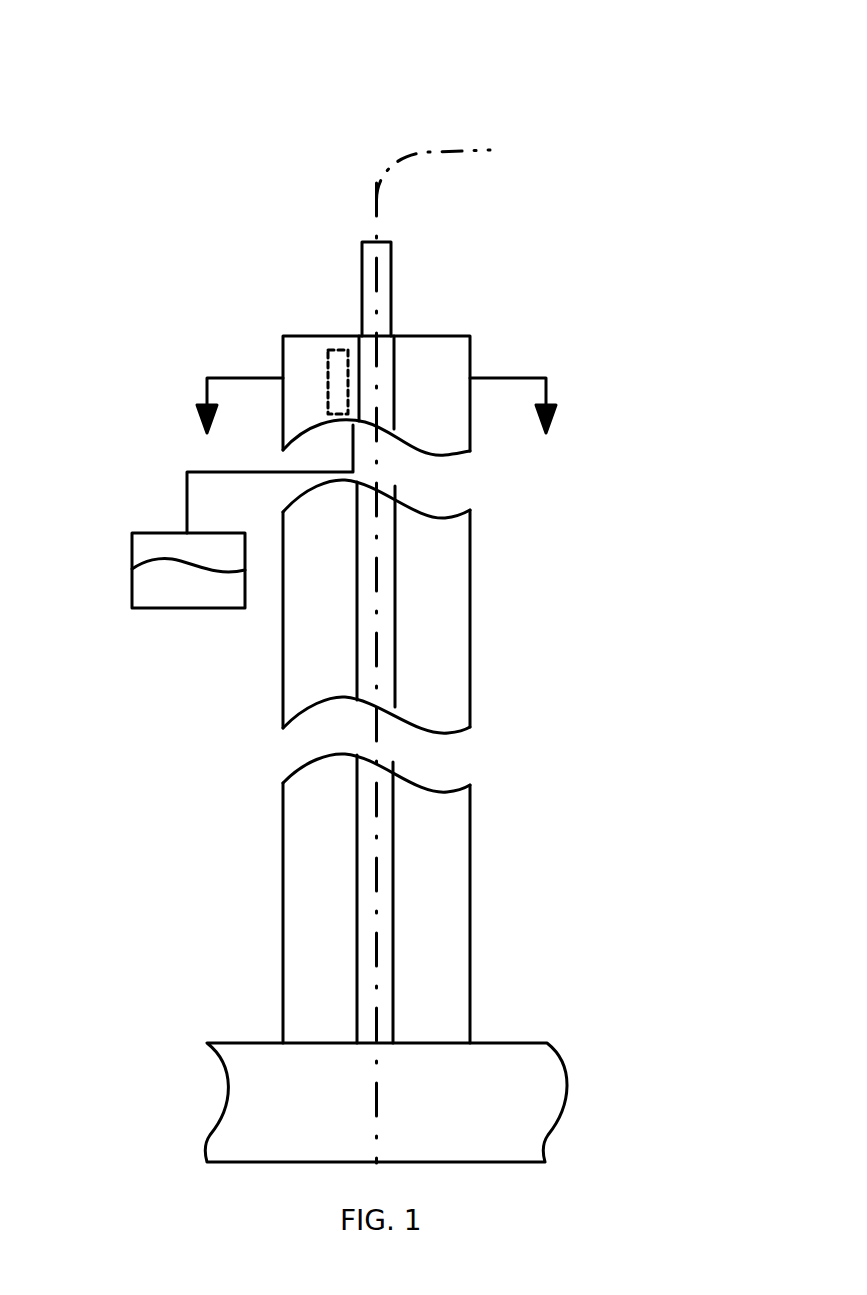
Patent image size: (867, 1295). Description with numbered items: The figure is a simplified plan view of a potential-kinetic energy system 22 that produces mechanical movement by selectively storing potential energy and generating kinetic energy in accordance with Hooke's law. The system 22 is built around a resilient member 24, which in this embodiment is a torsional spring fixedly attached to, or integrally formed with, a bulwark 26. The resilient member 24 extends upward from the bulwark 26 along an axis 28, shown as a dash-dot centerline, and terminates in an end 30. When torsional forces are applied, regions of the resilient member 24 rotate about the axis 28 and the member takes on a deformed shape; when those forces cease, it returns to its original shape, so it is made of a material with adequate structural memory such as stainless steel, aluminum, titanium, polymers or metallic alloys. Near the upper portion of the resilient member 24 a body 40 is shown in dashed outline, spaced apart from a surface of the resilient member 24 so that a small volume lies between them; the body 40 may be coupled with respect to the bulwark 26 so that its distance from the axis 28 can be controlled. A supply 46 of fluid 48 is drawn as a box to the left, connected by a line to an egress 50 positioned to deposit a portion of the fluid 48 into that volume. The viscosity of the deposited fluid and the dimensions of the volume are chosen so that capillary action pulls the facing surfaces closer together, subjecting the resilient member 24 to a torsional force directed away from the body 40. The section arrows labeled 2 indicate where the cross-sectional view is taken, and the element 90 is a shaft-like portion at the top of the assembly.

The potential-kinetic energy (PKE) system 22 is at (443, 86).
The axis 28 is at (450, 651).
The tool shaft 90 is at (394, 278).
The resilient member 24 is at (470, 337).
The body 40 is at (335, 340).
The egress 50 is at (337, 422).
The end 30 is at (230, 345).
The section line 2 is at (376, 424).
The supply 46 is at (156, 572).
The fluid 48 is at (188, 585).
The bulwark 26 is at (507, 1040).